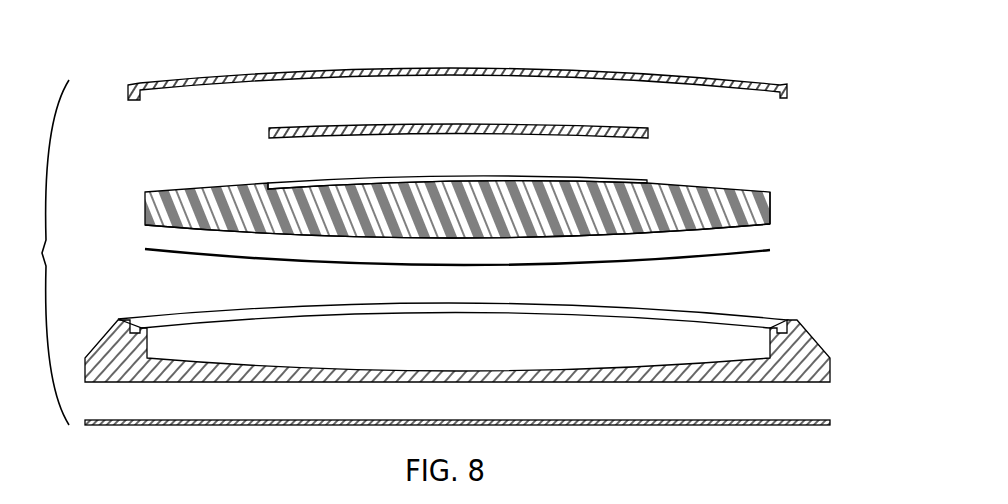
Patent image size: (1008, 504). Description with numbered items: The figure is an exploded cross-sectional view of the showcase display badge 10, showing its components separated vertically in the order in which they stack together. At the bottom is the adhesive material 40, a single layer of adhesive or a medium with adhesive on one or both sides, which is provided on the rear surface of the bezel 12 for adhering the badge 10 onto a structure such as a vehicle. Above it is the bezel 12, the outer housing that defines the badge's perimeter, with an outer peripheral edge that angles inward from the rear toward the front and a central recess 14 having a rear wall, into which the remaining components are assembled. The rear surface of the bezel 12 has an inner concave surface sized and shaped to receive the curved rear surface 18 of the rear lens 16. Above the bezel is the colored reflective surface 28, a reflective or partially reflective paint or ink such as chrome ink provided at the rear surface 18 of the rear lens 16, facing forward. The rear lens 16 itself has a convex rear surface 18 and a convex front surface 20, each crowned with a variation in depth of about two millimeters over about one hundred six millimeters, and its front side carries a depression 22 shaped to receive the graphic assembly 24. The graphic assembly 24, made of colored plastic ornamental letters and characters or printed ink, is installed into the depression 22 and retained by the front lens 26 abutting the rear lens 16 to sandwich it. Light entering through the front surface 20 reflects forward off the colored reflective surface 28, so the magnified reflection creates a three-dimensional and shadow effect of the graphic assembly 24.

The showcase display badge 10 is at (44, 252).
The bezel 12 is at (813, 332).
The central recess 14 is at (645, 342).
The rear lens 16 is at (772, 212).
The rear surface 18 is at (743, 227).
The front surface 20 is at (708, 187).
The depression 22 is at (617, 187).
The graphic assembly 24 is at (605, 127).
The front lens 26 is at (758, 80).
The colored reflective surface 28 is at (742, 255).
The adhesive material 40 is at (813, 418).